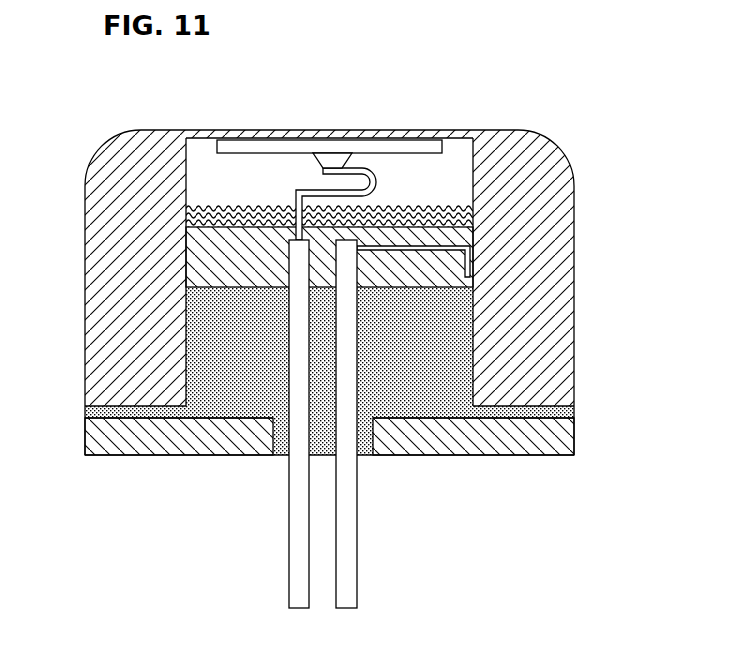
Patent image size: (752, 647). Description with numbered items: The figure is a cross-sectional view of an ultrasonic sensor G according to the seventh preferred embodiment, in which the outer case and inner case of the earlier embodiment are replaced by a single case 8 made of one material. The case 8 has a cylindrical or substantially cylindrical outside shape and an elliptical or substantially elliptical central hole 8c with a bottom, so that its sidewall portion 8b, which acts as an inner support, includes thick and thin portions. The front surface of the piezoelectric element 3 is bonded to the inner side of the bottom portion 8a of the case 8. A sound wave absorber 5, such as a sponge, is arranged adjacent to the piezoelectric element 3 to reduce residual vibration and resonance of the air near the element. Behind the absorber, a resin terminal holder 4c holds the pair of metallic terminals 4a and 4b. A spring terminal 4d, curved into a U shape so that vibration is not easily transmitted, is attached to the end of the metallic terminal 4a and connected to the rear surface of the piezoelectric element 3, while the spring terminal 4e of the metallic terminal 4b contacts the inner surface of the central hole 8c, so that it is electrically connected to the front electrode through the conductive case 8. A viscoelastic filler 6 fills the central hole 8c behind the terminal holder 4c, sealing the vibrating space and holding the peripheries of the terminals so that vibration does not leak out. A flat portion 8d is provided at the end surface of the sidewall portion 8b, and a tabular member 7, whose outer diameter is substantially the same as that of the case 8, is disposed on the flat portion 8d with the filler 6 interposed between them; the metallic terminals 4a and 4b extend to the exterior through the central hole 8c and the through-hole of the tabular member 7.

The ultrasonic sensor G is at (570, 128).
The piezoelectric element 3 is at (298, 148).
The metallic terminal 4a is at (292, 583).
The metallic terminal 4b is at (358, 585).
The terminal holder 4c is at (202, 263).
The spring terminal 4d is at (370, 170).
The spring terminal 4e is at (470, 262).
The sound wave absorber 5 is at (243, 207).
The filler 6 is at (242, 393).
The tabular member 7 is at (153, 442).
The case 8 is at (362, 288).
The bottom portion 8a is at (408, 133).
The sidewall portion 8b is at (557, 340).
The central hole 8c is at (472, 378).
The flat portion 8d is at (538, 410).